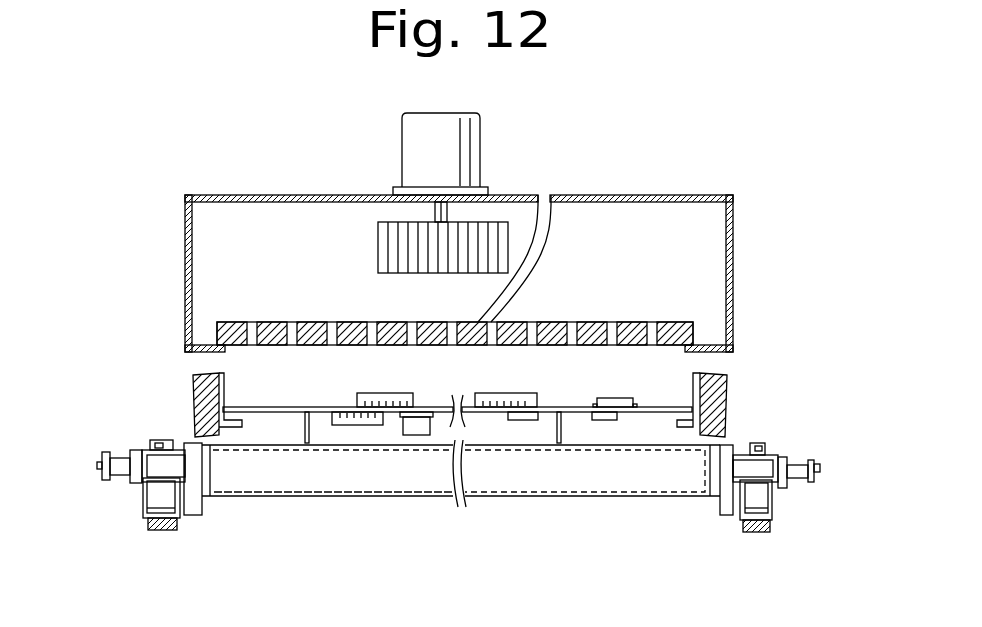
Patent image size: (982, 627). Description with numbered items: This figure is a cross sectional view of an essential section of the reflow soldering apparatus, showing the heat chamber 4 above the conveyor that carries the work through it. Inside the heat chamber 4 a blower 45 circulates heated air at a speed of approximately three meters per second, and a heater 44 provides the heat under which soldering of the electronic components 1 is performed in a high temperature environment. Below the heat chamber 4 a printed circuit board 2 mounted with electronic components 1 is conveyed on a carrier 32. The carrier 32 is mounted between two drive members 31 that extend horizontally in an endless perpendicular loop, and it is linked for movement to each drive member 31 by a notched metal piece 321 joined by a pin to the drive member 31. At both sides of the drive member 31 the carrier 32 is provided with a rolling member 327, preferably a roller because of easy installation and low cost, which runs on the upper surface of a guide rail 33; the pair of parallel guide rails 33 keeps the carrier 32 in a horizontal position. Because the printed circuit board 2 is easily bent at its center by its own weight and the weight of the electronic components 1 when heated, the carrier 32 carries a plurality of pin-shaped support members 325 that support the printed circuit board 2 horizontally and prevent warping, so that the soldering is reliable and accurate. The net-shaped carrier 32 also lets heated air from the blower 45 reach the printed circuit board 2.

The electronic components 1 is at (415, 435).
The printed circuit board 2 is at (654, 412).
The heat chamber 4 is at (703, 245).
The drive member 31 is at (107, 452).
The carrier 32 is at (348, 500).
The guide rail 33 is at (168, 532).
The heater 44 is at (657, 320).
The blower 45 is at (378, 243).
The notched metal piece 321 is at (137, 490).
The pin-shaped support member 325 is at (302, 430).
The rolling member 327 is at (168, 480).